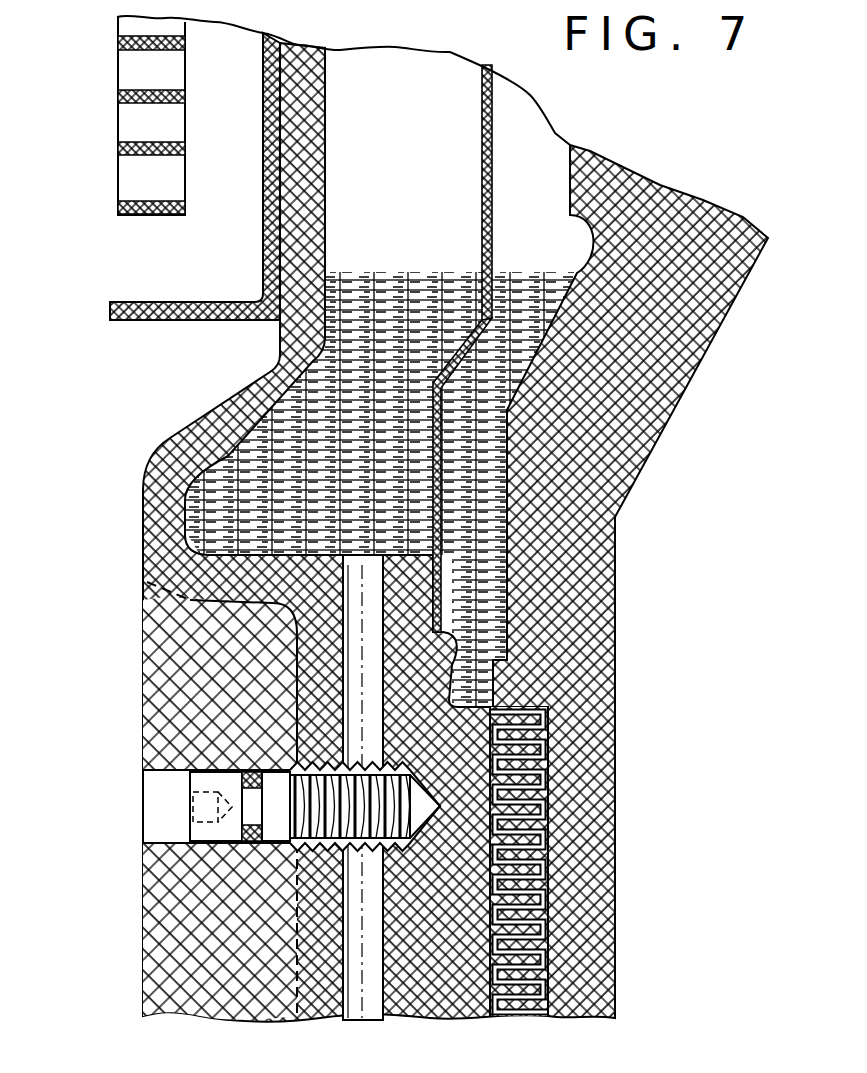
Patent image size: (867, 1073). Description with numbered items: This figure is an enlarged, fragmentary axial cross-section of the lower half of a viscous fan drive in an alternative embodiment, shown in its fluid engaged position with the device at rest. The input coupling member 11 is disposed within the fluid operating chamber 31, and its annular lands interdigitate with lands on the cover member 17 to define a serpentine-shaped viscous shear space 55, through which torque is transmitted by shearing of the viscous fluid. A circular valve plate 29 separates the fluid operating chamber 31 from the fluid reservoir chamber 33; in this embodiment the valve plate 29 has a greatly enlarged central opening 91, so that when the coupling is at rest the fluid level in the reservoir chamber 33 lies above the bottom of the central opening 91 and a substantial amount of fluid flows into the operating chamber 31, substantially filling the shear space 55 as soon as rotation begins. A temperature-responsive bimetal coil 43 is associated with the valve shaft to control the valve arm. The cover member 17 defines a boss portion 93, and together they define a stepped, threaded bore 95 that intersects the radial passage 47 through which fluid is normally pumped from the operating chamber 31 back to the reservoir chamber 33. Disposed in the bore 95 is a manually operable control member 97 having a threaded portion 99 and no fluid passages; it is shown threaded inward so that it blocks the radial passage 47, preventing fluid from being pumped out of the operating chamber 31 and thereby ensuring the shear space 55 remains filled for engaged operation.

The input coupling member 11 is at (622, 593).
The cover member 17 is at (198, 445).
The valve plate 29 is at (456, 352).
The fluid operating chamber 31 is at (537, 155).
The fluid reservoir chamber 33 is at (381, 402).
The bimetal coil 43 is at (117, 150).
The radial passage 47 is at (362, 993).
The viscous shear space 55 is at (567, 848).
The central opening 91 is at (486, 237).
The boss portion 93 is at (150, 700).
The threaded bore 95 is at (150, 778).
The control member 97 is at (181, 822).
The threaded portion 99 is at (390, 773).